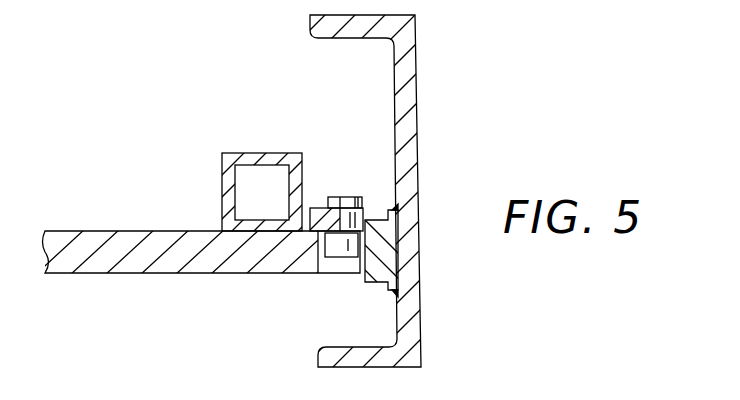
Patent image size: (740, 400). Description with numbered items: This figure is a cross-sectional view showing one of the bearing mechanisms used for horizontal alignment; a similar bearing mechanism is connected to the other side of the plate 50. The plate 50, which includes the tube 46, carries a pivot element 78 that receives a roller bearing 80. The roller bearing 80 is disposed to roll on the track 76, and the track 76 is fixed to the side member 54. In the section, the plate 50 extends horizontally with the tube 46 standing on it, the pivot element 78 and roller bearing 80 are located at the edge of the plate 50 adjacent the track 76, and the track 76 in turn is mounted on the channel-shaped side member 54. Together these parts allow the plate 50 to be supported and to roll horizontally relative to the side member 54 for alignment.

The tube 46 is at (275, 153).
The plate 50 is at (242, 266).
The side member 54 is at (405, 95).
The track 76 is at (385, 252).
The pivot element 78 is at (317, 209).
The roller bearing 80 is at (333, 254).